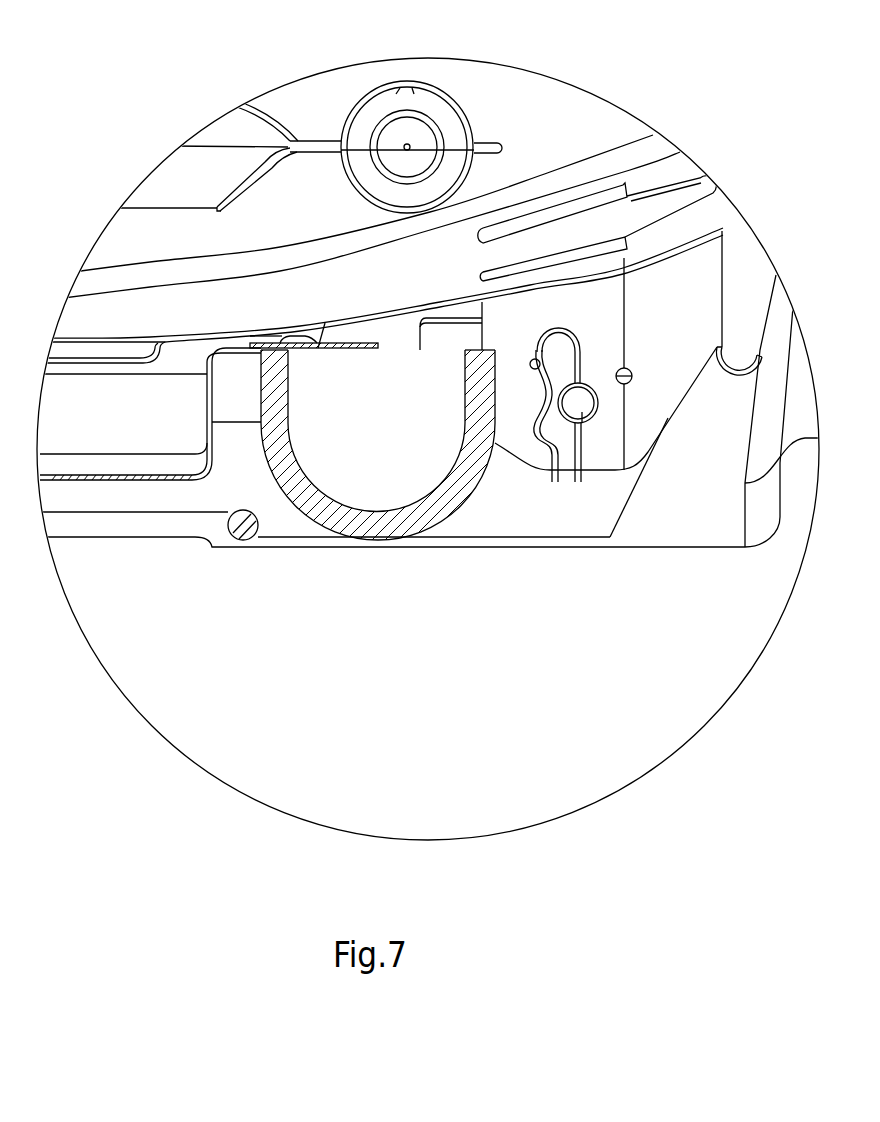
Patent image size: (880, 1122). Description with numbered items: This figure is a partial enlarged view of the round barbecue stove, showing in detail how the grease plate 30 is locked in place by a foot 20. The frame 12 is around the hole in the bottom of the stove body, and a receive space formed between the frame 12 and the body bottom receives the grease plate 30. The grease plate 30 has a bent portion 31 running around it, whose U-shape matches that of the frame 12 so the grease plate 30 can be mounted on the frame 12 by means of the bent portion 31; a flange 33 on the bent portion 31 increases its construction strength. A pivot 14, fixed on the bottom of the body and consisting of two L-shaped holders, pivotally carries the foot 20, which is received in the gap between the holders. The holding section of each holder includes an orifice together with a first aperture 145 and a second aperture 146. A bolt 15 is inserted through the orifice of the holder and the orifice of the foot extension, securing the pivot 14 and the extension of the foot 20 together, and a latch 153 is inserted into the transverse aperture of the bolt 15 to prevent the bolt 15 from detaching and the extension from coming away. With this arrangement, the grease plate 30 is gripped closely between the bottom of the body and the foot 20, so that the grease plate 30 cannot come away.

The grease plate 30 is at (137, 508).
The frame 12 is at (243, 540).
The flange 33 is at (292, 352).
The foot 20 is at (373, 573).
The bent portion 31 is at (360, 322).
The second aperture 146 is at (527, 378).
The latch 153 is at (555, 482).
The bolt 15 is at (586, 420).
The first aperture 145 is at (624, 385).
The pivot 14 is at (688, 428).